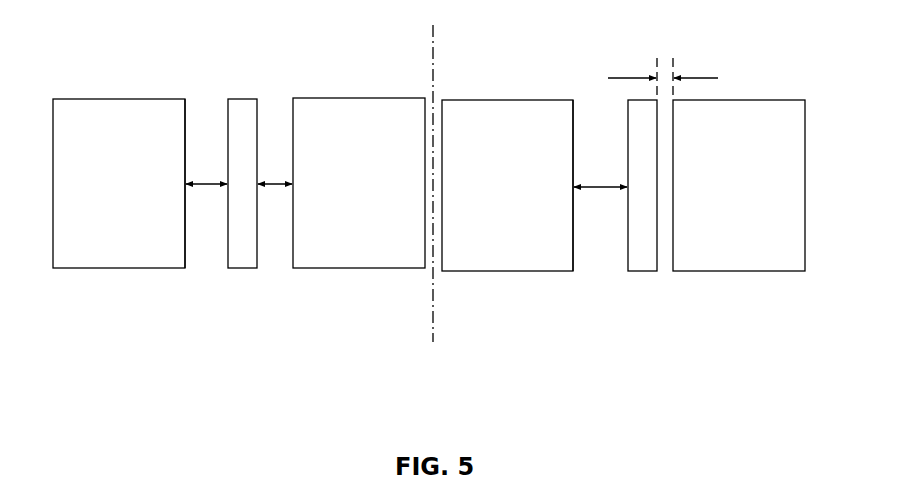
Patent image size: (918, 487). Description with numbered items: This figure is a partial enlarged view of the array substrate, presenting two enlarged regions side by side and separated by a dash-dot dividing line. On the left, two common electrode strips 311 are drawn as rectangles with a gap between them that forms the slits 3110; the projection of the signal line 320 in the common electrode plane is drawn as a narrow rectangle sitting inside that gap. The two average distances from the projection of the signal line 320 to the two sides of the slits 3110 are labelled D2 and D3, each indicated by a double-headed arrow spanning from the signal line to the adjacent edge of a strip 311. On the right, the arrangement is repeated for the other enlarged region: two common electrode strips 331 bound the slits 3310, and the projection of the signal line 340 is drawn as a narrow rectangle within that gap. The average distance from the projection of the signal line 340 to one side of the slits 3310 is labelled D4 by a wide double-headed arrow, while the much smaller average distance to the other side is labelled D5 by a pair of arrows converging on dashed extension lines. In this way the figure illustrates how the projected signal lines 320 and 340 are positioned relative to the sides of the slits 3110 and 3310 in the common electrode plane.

The common electrode strip 311 is at (102, 127).
The slits 3110 is at (200, 110).
The signal line 320 is at (230, 255).
The common electrode strip 331 is at (488, 120).
The slits 3310 is at (587, 112).
The signal line 340 is at (638, 257).
The average distance D2 is at (206, 169).
The average distance D3 is at (275, 169).
The average distance D4 is at (600, 172).
The average distance D5 is at (663, 63).